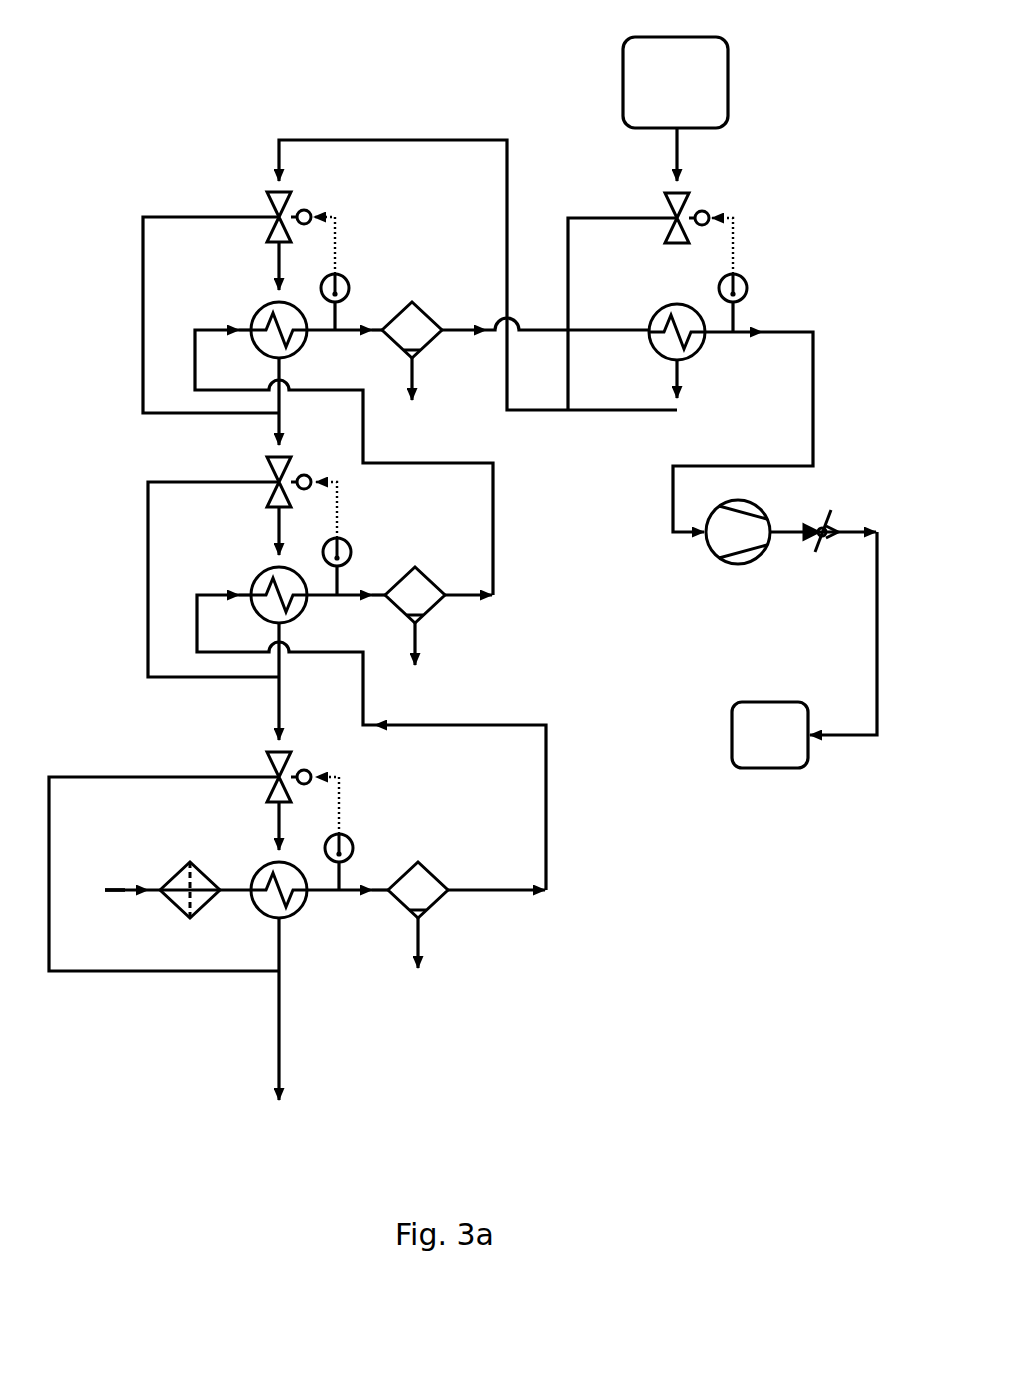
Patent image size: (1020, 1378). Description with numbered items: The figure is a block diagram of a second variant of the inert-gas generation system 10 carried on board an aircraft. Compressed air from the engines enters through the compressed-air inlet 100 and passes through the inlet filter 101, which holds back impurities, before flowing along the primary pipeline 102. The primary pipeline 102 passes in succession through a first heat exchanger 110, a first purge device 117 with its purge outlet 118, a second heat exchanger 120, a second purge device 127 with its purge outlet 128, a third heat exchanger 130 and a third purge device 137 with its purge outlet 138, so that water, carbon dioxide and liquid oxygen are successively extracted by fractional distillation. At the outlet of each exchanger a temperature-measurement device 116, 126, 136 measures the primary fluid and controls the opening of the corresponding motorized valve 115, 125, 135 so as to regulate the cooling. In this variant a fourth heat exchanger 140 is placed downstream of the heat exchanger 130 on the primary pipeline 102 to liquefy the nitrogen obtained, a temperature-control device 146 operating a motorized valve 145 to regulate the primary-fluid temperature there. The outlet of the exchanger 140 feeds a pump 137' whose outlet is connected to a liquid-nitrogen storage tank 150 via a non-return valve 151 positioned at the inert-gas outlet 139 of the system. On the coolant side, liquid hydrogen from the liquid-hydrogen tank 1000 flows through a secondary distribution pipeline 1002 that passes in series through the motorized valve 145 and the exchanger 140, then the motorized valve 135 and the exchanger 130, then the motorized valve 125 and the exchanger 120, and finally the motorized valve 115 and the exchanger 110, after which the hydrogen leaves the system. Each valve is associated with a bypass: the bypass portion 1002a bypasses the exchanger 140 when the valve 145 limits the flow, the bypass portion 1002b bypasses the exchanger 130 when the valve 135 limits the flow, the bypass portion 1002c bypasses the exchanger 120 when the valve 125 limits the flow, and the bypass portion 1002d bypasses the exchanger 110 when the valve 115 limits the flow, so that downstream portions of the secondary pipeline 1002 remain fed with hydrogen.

The inert-gas generation system 10 is at (196, 104).
The liquid-hydrogen tank 1000 is at (730, 77).
The secondary distribution pipeline 1002 is at (392, 138).
The bypass portion of secondary pipeline 1002a is at (618, 215).
The bypass portion of secondary pipeline 1002b is at (143, 240).
The bypass portion of secondary pipeline 1002c is at (148, 530).
The bypass portion of secondary pipeline 1002d is at (112, 774).
The primary pipeline 102 is at (450, 460).
The compressed-air inlet 100 is at (130, 882).
The inlet filter 101 is at (174, 911).
The first heat exchanger 110 is at (284, 915).
The motorized valve 115 is at (291, 752).
The temperature-measurement device 116 is at (351, 845).
The first purge device 117 is at (400, 898).
The purge outlet 118 is at (416, 950).
The second heat exchanger 120 is at (282, 608).
The motorized valve 125 is at (288, 455).
The temperature-measurement device 126 is at (350, 542).
The second purge device 127 is at (418, 582).
The purge outlet 128 is at (420, 640).
The third heat exchanger 130 is at (252, 310).
The motorized valve 135 is at (287, 195).
The temperature-measurement device 136 is at (345, 280).
The third purge device 137 is at (433, 317).
The pump 137' is at (722, 555).
The purge outlet 138 is at (420, 380).
The inert-gas outlet 139 is at (783, 535).
The fourth heat exchanger 140 is at (655, 312).
The motorized valve 145 is at (688, 195).
The temperature-control device 146 is at (748, 284).
The liquid-nitrogen storage tank 150 is at (755, 702).
The non-return valve 151 is at (822, 550).